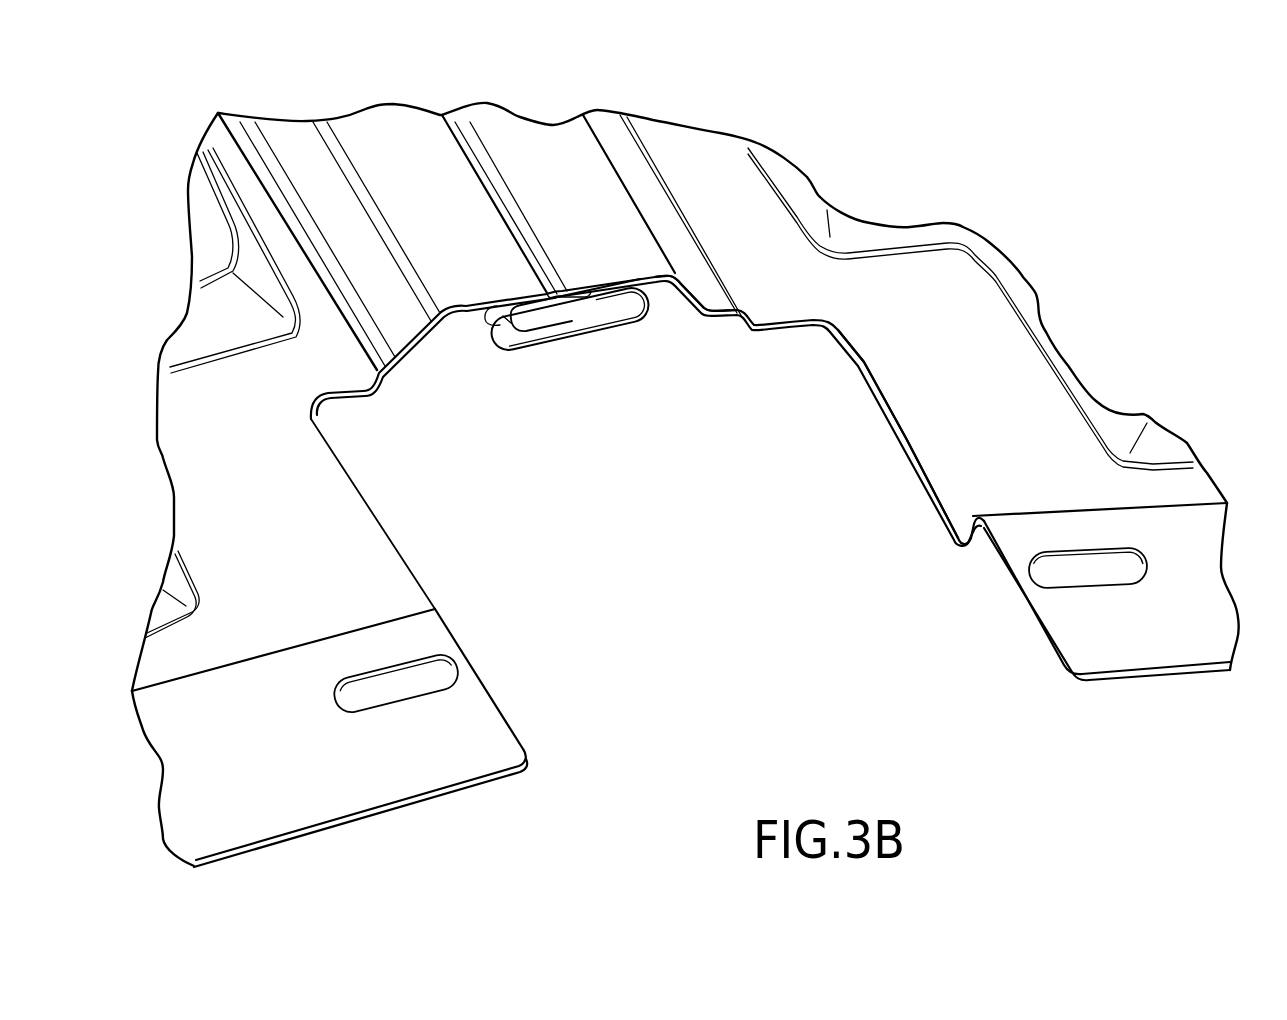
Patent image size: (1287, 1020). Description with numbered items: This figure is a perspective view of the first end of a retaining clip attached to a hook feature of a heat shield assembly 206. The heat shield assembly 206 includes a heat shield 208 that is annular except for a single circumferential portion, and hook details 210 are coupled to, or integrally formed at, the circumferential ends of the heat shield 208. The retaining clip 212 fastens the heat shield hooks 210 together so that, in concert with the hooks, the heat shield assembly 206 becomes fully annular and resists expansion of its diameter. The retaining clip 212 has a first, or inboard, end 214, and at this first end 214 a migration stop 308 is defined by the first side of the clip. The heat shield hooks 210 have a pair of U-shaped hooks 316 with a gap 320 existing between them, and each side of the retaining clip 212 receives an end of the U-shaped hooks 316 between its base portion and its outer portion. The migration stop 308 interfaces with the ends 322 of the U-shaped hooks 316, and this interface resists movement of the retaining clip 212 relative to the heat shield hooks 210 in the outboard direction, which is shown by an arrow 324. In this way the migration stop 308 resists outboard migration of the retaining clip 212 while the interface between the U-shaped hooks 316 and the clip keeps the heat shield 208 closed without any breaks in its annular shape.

The heat shield assembly 206 is at (918, 516).
The heat shield 208 is at (381, 598).
The hook detail 210 is at (585, 143).
The retaining clip 212 is at (613, 360).
The first end 214 is at (637, 340).
The migration stop 308 is at (543, 320).
The U-shaped hook 316 is at (478, 325).
The gap 320 is at (530, 257).
The end of U-shaped hook 322 is at (505, 322).
The arrow 324 is at (668, 303).